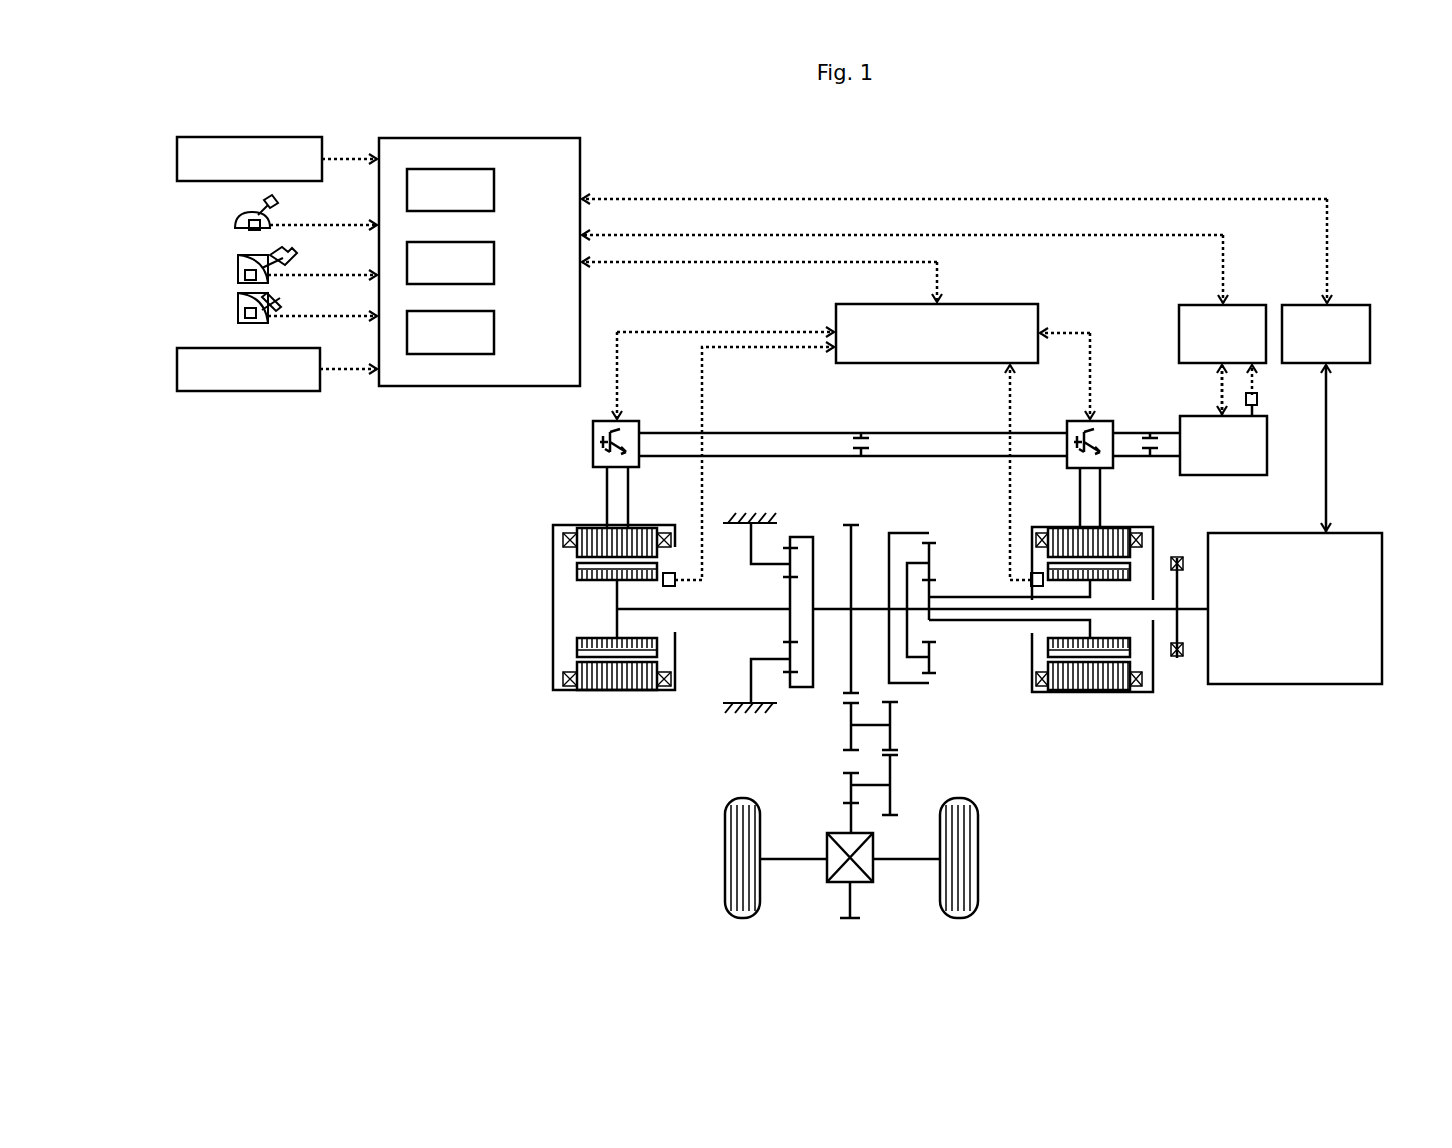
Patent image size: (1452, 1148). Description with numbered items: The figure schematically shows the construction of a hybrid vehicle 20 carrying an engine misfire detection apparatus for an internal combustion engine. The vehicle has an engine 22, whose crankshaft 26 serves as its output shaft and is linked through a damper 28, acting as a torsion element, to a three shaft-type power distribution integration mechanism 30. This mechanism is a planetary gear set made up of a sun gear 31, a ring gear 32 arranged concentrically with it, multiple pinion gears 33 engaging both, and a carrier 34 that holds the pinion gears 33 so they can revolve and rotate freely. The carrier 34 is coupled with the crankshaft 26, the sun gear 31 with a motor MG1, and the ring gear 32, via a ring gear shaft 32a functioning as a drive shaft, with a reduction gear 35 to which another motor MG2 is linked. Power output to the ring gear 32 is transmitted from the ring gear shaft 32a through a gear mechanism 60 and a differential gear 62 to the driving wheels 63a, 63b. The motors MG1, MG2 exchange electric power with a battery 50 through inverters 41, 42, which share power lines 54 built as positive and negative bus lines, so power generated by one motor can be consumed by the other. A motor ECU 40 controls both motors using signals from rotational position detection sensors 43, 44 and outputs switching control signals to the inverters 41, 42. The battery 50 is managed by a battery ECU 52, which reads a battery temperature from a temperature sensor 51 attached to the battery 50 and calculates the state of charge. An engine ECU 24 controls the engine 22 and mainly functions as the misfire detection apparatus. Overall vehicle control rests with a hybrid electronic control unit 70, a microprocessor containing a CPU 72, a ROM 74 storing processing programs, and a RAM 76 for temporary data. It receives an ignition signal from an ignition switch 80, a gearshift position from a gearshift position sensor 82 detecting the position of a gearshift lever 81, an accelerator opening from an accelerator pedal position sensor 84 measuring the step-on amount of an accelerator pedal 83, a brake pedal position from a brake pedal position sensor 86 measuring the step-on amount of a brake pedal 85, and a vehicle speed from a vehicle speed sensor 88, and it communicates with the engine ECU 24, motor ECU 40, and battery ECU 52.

The hybrid vehicle 20 is at (1124, 166).
The engine 22 is at (1382, 614).
The engine electronic control unit 24 is at (1345, 305).
The crankshaft 26 is at (1192, 610).
The damper 28 is at (1177, 660).
The power distribution integration mechanism 30 is at (936, 519).
The sun gear 31 is at (929, 625).
The ring gear 32 is at (929, 673).
The ring gear shaft 32a is at (833, 537).
The pinion gears 33 is at (929, 642).
The carrier 34 is at (898, 540).
The reduction gear 35 is at (794, 511).
The motor electronic control unit 40 is at (980, 304).
The inverter 41 is at (1103, 421).
The inverter 42 is at (630, 421).
The rotational position detection sensor 43 is at (1028, 545).
The rotational position detection sensor 44 is at (674, 573).
The battery 50 is at (1222, 475).
The temperature sensor 51 is at (1262, 398).
The battery electronic control unit 52 is at (1197, 305).
The power lines 54 is at (917, 457).
The gear mechanism 60 is at (935, 767).
The differential gear 62 is at (873, 875).
The driving wheel 63a is at (725, 893).
The driving wheel 63b is at (978, 893).
The hybrid electronic control unit 70 is at (480, 138).
The CPU 72 is at (494, 189).
The ROM 74 is at (494, 263).
The RAM 76 is at (494, 333).
The ignition switch 80 is at (177, 152).
The gearshift lever 81 is at (268, 207).
The gearshift position sensor 82 is at (235, 225).
The accelerator pedal 83 is at (265, 262).
The accelerator pedal position sensor 84 is at (240, 275).
The brake pedal 85 is at (268, 305).
The brake pedal position sensor 86 is at (240, 322).
The vehicle speed sensor 88 is at (177, 360).
The motor MG1 is at (1120, 692).
The motor MG2 is at (580, 525).